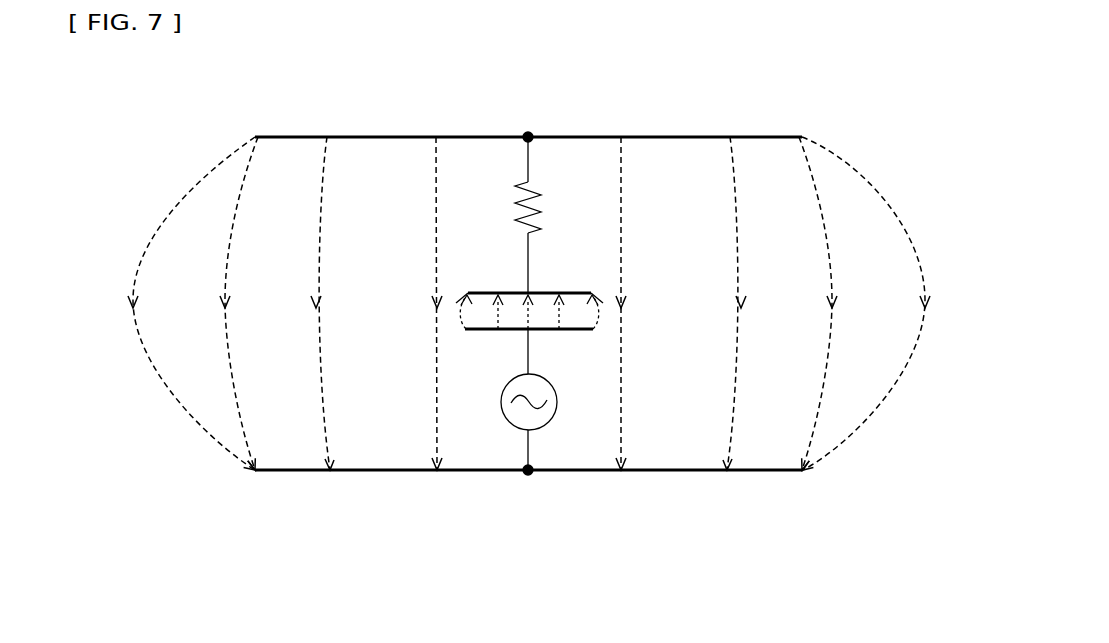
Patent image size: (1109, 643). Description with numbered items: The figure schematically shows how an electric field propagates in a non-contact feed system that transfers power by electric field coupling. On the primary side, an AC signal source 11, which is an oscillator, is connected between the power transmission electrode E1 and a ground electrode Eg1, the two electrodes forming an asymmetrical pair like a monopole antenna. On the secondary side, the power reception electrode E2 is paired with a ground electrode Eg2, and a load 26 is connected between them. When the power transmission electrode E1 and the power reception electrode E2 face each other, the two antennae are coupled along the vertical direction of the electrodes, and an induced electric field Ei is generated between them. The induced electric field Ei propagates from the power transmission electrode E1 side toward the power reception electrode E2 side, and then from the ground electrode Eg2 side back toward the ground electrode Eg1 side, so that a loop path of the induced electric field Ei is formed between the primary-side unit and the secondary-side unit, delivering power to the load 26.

The load 26 is at (507, 197).
The AC signal source 11 is at (500, 403).
The power transmission electrode E1 is at (545, 331).
The power reception electrode E2 is at (546, 291).
The ground electrode Eg1 is at (590, 473).
The ground electrode Eg2 is at (581, 136).
The induced electric field Ei is at (872, 180).